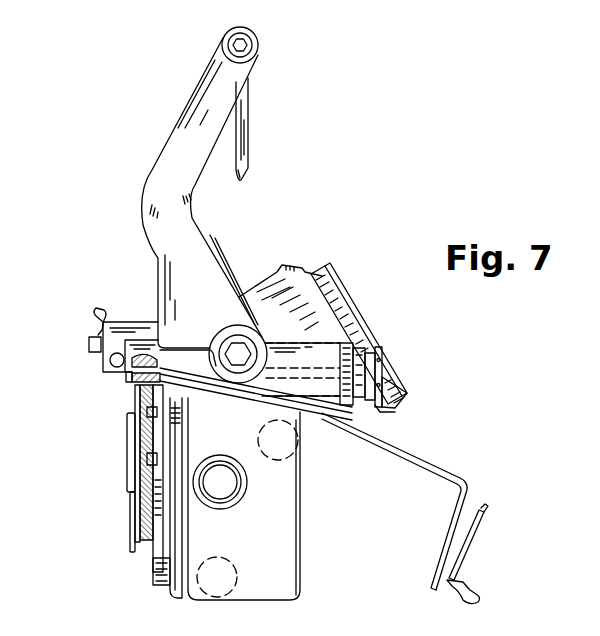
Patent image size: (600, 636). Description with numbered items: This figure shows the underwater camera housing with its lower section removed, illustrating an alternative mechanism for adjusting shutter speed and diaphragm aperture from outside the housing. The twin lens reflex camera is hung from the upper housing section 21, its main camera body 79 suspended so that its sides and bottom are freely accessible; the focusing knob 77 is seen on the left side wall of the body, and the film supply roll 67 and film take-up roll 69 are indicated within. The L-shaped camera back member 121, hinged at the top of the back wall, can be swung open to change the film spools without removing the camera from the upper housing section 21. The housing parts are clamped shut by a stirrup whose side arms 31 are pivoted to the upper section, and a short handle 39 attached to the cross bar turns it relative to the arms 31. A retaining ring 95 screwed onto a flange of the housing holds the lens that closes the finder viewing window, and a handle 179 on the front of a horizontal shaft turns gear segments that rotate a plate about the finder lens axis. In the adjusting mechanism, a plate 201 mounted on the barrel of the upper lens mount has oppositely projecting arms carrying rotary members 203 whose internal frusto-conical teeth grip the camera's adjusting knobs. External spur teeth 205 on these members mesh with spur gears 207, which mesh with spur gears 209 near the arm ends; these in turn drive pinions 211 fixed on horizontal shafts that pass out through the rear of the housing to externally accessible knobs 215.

The upper housing section 21 is at (291, 270).
The side arms 31 is at (150, 166).
The short handle 39 is at (246, 156).
The film supply roll 67 is at (238, 576).
The film take-up roll 69 is at (290, 461).
The focusing knob 77 is at (231, 500).
The main camera body 79 is at (261, 499).
The retaining ring 95 is at (340, 284).
The camera back member 121 is at (428, 460).
The handle 179 is at (93, 320).
The plate 201 is at (152, 428).
The rotary members 203 is at (150, 500).
The external spur teeth 205 is at (128, 468).
The spur gears 207 is at (157, 450).
The spur gears 209 is at (163, 432).
The pinions 211 is at (136, 380).
The knobs 215 is at (380, 372).